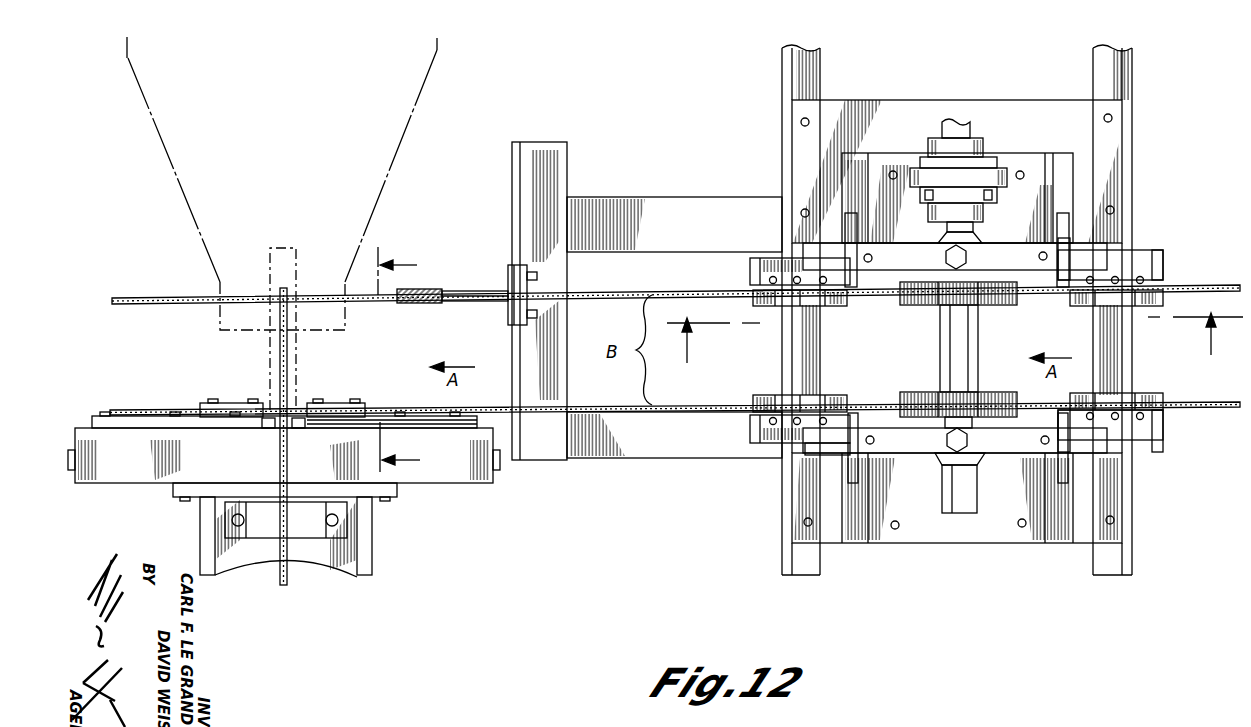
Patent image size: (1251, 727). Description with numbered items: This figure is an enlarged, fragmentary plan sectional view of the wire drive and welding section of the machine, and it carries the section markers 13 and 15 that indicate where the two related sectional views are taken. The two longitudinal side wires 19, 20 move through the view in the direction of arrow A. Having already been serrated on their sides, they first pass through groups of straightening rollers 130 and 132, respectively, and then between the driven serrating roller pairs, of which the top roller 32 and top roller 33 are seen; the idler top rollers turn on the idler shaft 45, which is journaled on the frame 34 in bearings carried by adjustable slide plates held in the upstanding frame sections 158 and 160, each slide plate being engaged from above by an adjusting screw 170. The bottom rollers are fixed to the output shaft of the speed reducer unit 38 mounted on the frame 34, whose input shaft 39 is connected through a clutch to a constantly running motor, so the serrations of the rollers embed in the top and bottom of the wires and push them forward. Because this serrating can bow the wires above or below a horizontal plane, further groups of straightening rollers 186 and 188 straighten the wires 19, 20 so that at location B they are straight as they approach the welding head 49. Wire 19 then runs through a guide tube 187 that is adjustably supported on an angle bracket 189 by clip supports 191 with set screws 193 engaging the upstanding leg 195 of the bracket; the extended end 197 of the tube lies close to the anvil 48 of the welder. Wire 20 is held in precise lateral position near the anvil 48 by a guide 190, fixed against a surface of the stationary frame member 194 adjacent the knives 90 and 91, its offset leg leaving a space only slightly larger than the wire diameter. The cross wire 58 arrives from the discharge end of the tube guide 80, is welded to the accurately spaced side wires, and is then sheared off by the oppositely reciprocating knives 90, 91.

The side wire 19 is at (168, 298).
The side wire 20 is at (166, 410).
The top roller 32 is at (1000, 306).
The top roller 33 is at (985, 392).
The frame 34 is at (1134, 557).
The speed reducer unit 38 is at (1000, 168).
The input shaft 39 is at (968, 126).
The idler shaft 45 is at (965, 514).
The anvil 48 is at (296, 252).
The welding head 49 is at (392, 198).
The cross wire 58 is at (288, 356).
The tube guide 80 is at (283, 430).
The knife 90 is at (266, 430).
The knife 91 is at (300, 430).
The group of straightening rollers 130 is at (1165, 278).
The group of straightening rollers 132 is at (1165, 418).
The frame section 158 is at (892, 300).
The frame section 160 is at (890, 408).
The adjusting screw 170 is at (966, 252).
The group of straightening rollers 186 is at (748, 270).
The guide tube 187 is at (470, 290).
The group of straightening rollers 188 is at (765, 445).
The angle bracket 189 is at (575, 196).
The guide 190 is at (332, 401).
The clip support 191 is at (506, 312).
The set screw 193 is at (540, 276).
The frame member 194 is at (440, 397).
The upstanding leg 195 is at (512, 190).
The extended end 197 is at (405, 305).
The section line 13 is at (955, 338).
The section line 15 is at (404, 354).